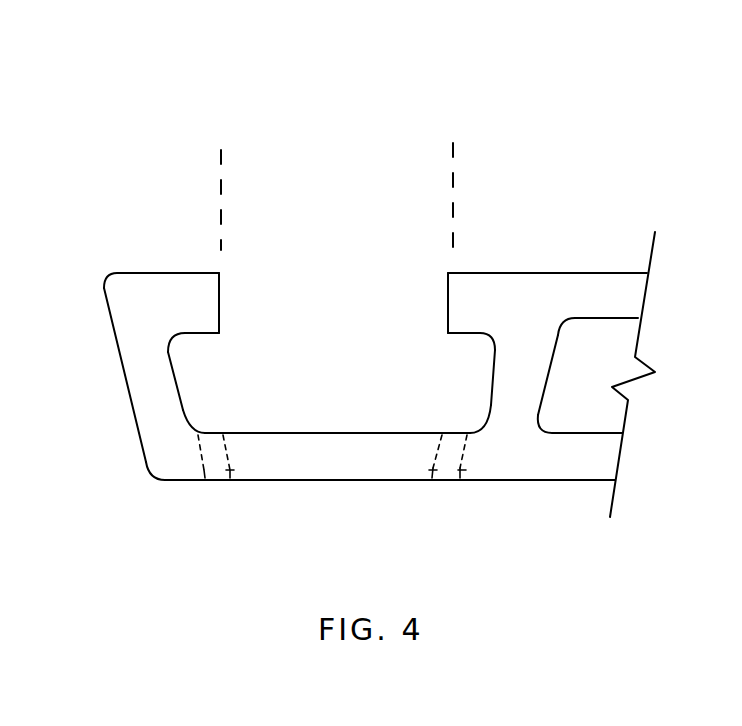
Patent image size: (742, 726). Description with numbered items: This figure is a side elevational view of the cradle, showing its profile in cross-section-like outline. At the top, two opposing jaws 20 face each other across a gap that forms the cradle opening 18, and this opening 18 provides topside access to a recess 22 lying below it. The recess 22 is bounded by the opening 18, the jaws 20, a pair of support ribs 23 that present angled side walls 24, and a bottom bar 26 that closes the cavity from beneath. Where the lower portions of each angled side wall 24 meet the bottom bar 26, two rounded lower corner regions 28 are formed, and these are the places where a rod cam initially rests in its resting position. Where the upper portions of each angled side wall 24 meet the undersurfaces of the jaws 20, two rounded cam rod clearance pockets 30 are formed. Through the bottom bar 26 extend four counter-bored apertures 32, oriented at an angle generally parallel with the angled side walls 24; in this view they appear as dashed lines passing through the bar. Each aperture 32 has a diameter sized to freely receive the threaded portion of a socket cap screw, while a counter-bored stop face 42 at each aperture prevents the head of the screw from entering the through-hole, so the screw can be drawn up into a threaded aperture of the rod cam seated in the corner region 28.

The cradle opening 18 is at (450, 137).
The jaws 20 is at (167, 272).
The recess 22 is at (328, 362).
The support ribs 23 is at (122, 378).
The angled side walls 24 is at (172, 376).
The bottom bar 26 is at (302, 433).
The rounded lower corner regions 28 is at (206, 416).
The rounded cam rod clearance pockets 30 is at (192, 353).
The counter-bored apertures 32 is at (218, 480).
The counter-bored stop face 42 is at (230, 483).